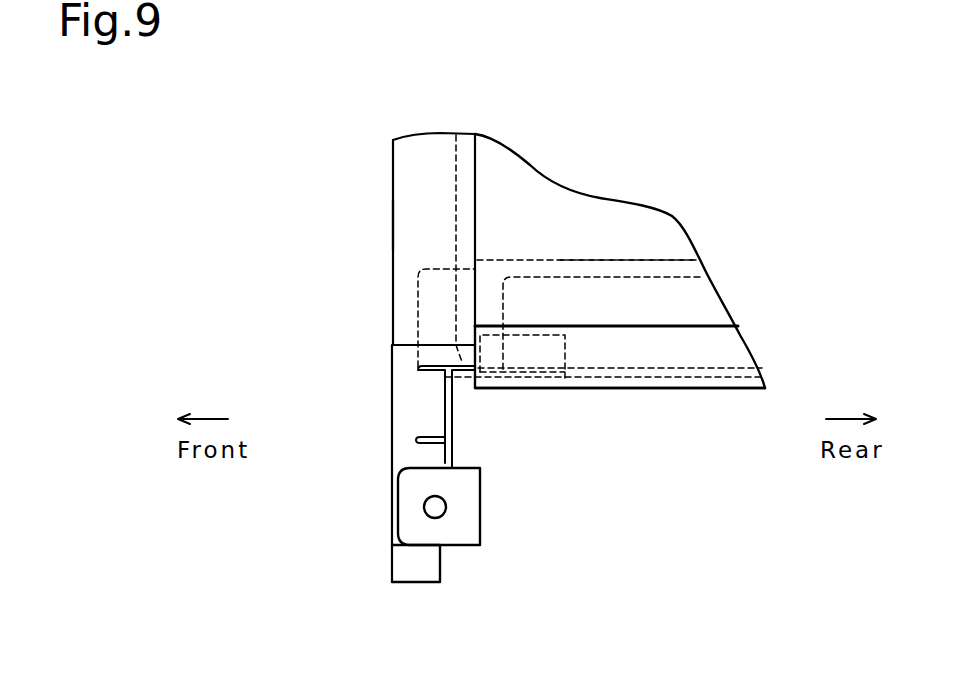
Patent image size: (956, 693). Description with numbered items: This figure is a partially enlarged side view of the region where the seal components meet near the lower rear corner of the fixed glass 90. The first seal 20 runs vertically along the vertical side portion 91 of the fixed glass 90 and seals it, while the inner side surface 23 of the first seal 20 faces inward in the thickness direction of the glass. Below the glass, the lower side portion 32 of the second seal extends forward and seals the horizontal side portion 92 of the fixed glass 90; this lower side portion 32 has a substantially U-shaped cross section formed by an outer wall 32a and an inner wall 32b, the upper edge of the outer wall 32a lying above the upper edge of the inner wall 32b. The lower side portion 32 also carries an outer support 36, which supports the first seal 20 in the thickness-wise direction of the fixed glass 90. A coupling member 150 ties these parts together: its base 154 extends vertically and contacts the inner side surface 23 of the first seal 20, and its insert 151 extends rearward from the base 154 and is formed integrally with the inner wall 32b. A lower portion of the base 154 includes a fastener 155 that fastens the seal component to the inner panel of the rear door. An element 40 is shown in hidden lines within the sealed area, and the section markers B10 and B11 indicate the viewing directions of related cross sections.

The first seal 20 is at (378, 187).
The inner side surface 23 is at (395, 224).
The outer support 36 is at (418, 291).
The engine 40 is at (603, 273).
The fixed glass 90 is at (543, 182).
The vertical side portion 91 is at (455, 152).
The lower side portion 32 is at (594, 399).
The outer wall 32a is at (670, 262).
The inner wall 32b is at (696, 333).
The horizontal side portion 92 is at (738, 370).
The insert 151 is at (568, 380).
The base 154 is at (393, 456).
The fastener 155 is at (400, 507).
The coupling member 150 is at (400, 596).
The viewing direction B10 is at (378, 352).
The viewing direction B11 is at (378, 395).